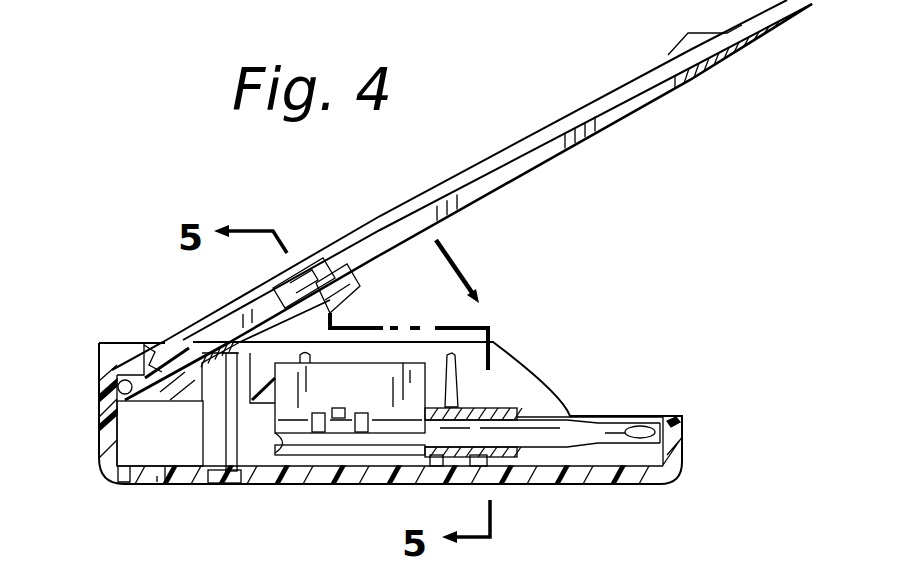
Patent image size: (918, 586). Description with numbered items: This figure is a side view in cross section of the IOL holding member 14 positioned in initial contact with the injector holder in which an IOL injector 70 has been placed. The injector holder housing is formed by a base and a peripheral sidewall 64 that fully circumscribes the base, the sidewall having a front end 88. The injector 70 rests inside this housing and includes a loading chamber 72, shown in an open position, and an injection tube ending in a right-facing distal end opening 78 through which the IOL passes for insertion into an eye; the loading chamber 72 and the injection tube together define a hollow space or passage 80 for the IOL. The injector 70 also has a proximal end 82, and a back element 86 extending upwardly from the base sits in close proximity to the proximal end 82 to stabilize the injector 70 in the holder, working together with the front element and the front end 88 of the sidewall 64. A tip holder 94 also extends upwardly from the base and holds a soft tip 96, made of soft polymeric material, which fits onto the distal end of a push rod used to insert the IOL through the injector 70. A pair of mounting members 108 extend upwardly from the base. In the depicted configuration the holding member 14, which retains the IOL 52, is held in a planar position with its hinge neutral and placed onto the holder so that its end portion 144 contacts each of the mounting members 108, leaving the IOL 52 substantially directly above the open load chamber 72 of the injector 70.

The IOL holding member 14 is at (541, 105).
The IOL 52 is at (331, 280).
The tip holder 94 is at (352, 313).
The IOL injector 70 is at (510, 397).
The peripheral sidewall 64 is at (680, 416).
The front end of sidewall 88 is at (683, 450).
The distal end opening 78 is at (647, 439).
The hollow space or passage 80 is at (492, 437).
The loading chamber 72 is at (386, 438).
The proximal end 82 is at (301, 447).
The back element 86 is at (268, 470).
The soft tip 96 is at (227, 418).
The mounting members 108 is at (147, 423).
The end portion of holding member 144 is at (102, 408).